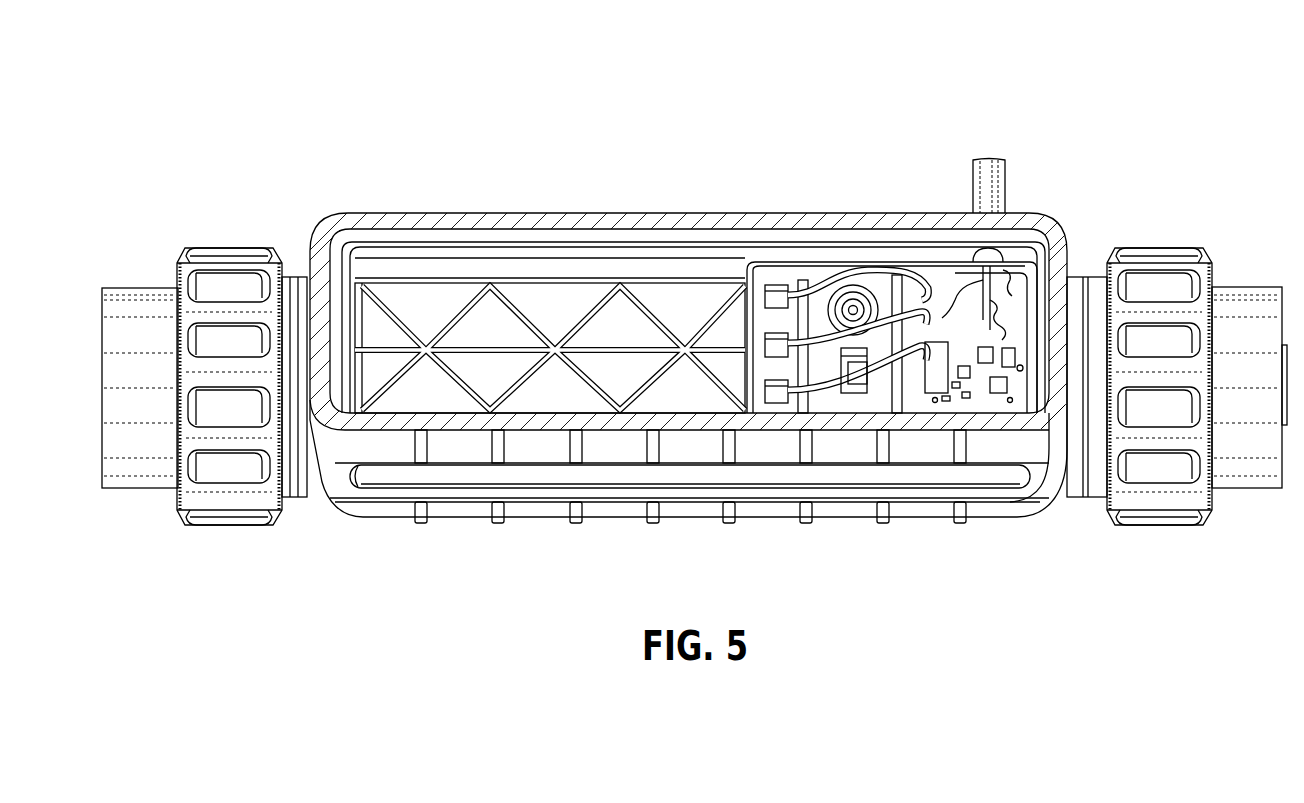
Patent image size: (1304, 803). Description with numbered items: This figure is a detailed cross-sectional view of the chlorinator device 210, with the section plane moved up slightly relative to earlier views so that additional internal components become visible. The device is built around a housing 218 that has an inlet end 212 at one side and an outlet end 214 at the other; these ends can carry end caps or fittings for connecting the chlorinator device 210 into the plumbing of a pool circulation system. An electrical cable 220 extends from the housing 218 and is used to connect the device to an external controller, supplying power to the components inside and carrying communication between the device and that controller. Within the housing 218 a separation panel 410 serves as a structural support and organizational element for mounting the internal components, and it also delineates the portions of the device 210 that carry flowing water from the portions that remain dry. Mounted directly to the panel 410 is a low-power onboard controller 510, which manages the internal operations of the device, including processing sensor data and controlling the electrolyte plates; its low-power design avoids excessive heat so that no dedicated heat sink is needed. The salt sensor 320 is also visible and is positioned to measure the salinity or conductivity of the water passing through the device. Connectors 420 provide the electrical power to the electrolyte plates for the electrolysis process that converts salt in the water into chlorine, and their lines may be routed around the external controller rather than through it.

The chlorinator device 210 is at (216, 105).
The inlet end 212 is at (1243, 330).
The outlet end 214 is at (143, 328).
The housing 218 is at (1010, 507).
The electrical cable 220 is at (990, 183).
The salt sensor 320 is at (852, 395).
The separation panel 410 is at (548, 302).
The connectors 420 is at (747, 342).
The low-power onboard controller 510 is at (937, 310).